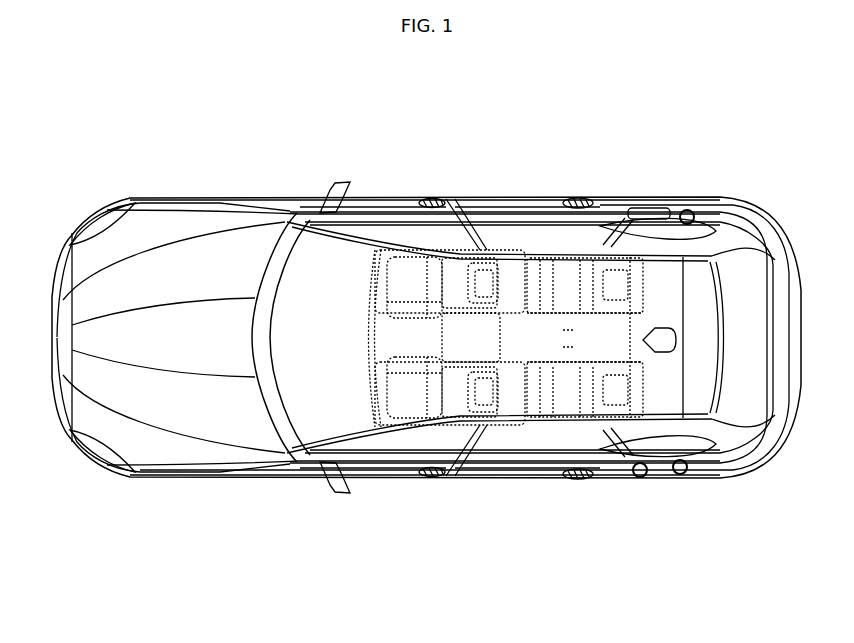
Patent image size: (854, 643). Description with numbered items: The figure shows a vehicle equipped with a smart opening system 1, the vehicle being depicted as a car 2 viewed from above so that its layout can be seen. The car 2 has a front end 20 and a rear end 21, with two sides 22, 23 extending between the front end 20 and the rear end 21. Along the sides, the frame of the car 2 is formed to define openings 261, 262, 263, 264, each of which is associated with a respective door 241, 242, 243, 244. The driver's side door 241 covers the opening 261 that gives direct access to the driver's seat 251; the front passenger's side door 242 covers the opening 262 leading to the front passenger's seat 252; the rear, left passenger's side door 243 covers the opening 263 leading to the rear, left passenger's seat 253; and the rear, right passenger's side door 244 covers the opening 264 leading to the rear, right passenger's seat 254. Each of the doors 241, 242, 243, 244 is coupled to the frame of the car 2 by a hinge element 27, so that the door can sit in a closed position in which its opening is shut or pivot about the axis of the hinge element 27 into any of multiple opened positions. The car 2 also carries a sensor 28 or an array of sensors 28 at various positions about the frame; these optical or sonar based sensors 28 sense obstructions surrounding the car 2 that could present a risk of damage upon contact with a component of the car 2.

The smart opening system 1 is at (658, 168).
The car 2 is at (243, 273).
The front end 20 is at (68, 397).
The rear end 21 is at (787, 263).
The side 22 is at (297, 214).
The side 23 is at (220, 472).
The driver's side door 241 is at (402, 478).
The front passenger's side door 242 is at (408, 208).
The rear, left passenger's side door 243 is at (510, 470).
The rear, right passenger's side door 244 is at (513, 208).
The driver's seat 251 is at (420, 403).
The front passenger's seat 252 is at (427, 263).
The rear, left passenger's seat 253 is at (530, 397).
The rear, right passenger's seat 254 is at (537, 267).
The opening 261 is at (380, 477).
The opening 262 is at (378, 206).
The opening 263 is at (599, 470).
The opening 264 is at (602, 216).
The hinge element 27 is at (292, 212).
The sensor 28 is at (692, 210).